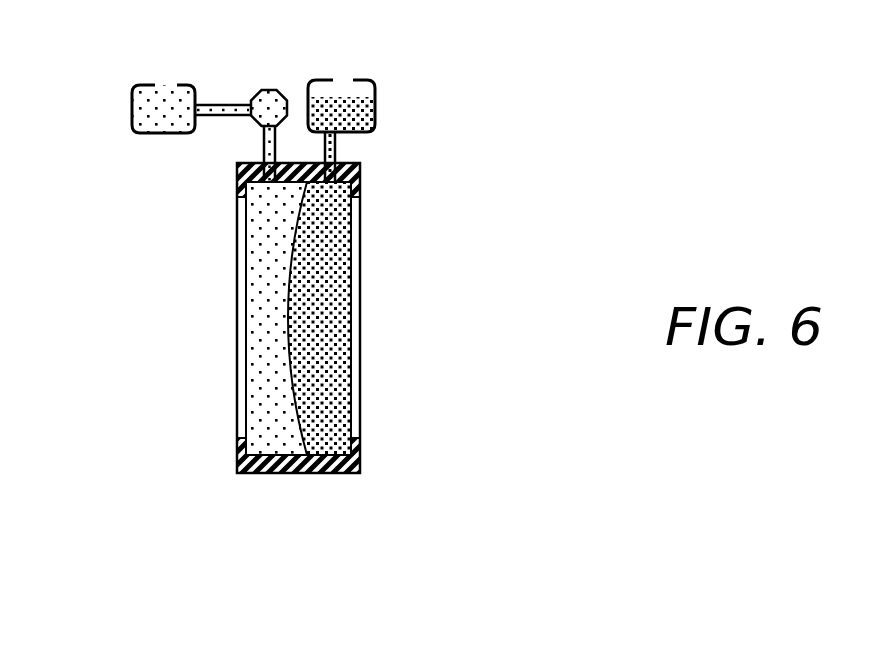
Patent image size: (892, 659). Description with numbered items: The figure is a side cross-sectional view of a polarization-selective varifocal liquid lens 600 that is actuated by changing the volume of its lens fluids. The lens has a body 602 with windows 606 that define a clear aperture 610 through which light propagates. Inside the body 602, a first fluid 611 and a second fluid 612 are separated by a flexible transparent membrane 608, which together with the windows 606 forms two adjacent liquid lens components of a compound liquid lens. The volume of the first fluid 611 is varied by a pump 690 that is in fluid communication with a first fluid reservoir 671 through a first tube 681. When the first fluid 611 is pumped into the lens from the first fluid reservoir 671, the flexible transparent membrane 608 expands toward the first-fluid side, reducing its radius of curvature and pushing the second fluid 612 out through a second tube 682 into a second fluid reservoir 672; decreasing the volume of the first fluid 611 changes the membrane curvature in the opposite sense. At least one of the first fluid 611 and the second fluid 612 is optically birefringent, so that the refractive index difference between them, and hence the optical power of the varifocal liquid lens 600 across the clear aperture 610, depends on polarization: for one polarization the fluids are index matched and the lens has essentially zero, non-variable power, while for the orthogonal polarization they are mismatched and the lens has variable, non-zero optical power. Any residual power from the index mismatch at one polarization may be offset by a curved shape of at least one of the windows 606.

The varifocal liquid lens 600 is at (553, 177).
The body 602 is at (287, 470).
The windows 606 is at (243, 410).
The flexible transparent membrane 608 is at (290, 325).
The clear aperture 610 is at (401, 308).
The first fluid 611 is at (262, 245).
The second fluid 612 is at (340, 240).
The first fluid reservoir 671 is at (131, 91).
The second fluid reservoir 672 is at (375, 92).
The first tube 681 is at (212, 104).
The second tube 682 is at (335, 148).
The pump 690 is at (268, 90).